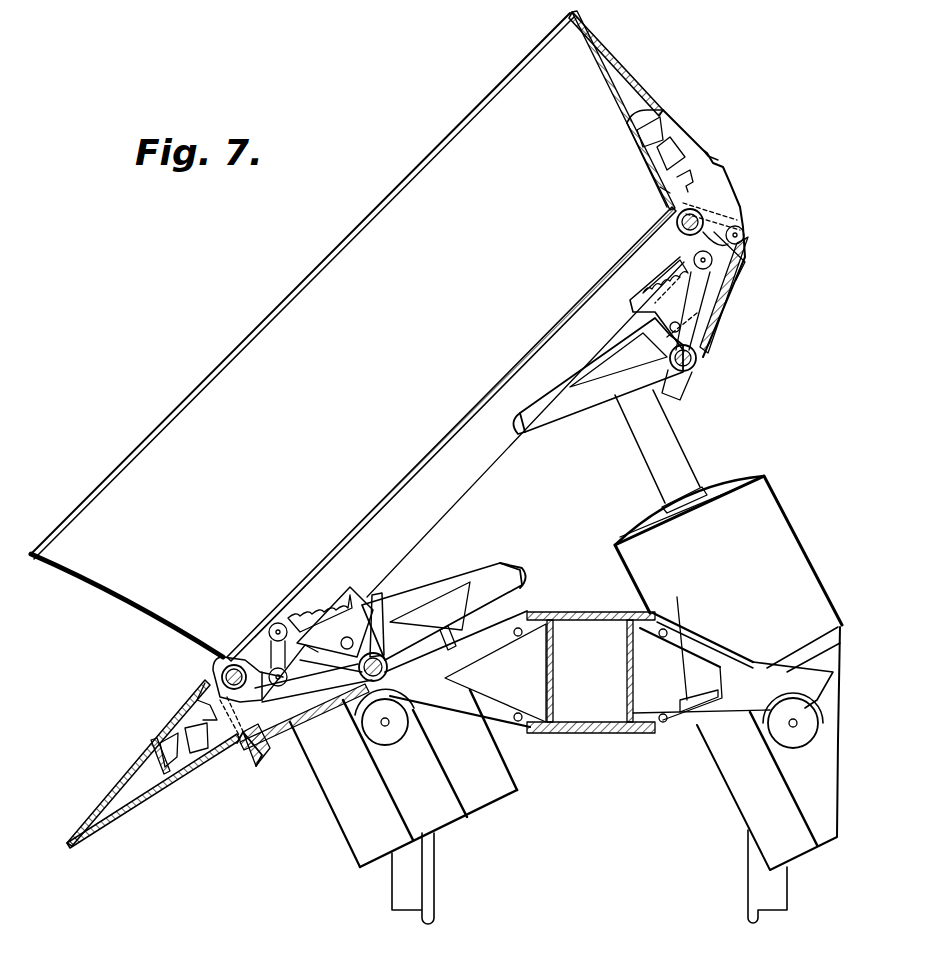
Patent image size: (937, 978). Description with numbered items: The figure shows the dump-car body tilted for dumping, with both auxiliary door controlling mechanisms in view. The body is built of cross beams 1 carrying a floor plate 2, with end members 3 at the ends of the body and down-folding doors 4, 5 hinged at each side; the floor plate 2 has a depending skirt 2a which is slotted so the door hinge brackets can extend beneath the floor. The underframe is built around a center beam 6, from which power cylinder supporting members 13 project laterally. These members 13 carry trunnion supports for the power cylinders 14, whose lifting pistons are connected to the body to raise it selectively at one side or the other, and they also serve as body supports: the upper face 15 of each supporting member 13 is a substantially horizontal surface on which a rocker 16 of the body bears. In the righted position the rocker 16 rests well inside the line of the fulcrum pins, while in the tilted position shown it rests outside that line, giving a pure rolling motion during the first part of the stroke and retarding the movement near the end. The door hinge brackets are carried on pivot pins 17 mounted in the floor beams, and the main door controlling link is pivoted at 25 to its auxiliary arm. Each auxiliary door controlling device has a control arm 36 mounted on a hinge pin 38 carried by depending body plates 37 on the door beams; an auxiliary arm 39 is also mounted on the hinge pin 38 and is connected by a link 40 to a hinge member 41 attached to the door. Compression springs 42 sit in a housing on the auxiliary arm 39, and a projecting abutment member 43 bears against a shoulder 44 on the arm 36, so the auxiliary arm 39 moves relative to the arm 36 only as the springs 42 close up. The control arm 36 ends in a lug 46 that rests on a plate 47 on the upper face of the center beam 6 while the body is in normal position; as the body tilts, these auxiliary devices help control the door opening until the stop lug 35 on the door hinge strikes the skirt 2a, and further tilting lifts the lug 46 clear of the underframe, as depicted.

The cross beams 1 is at (451, 434).
The floor plate 2 is at (590, 290).
The depending skirt 2a is at (247, 767).
The end members 3 is at (302, 335).
The down-folding door 4 is at (132, 760).
The down-folding door 5 is at (610, 108).
The center beam 6 is at (545, 662).
The power cylinder supporting members 13 is at (445, 700).
The power cylinders 14 is at (760, 488).
The upper face 15 is at (815, 672).
The rockers 16 is at (693, 318).
The pivot pins 17 is at (218, 680).
The pivot 25 is at (265, 620).
The stop lug 35 is at (718, 163).
The control arm 36 is at (600, 352).
The depending body plates 37 is at (315, 700).
The hinge pin 38 is at (700, 362).
The auxiliary arm 39 is at (305, 622).
The link 40 is at (740, 270).
The hinge member 41 is at (725, 190).
The compression springs 42 is at (312, 605).
The projecting abutment member 43 is at (352, 588).
The shoulder 44 is at (375, 598).
The lug 46 is at (525, 432).
The plate 47 is at (655, 617).